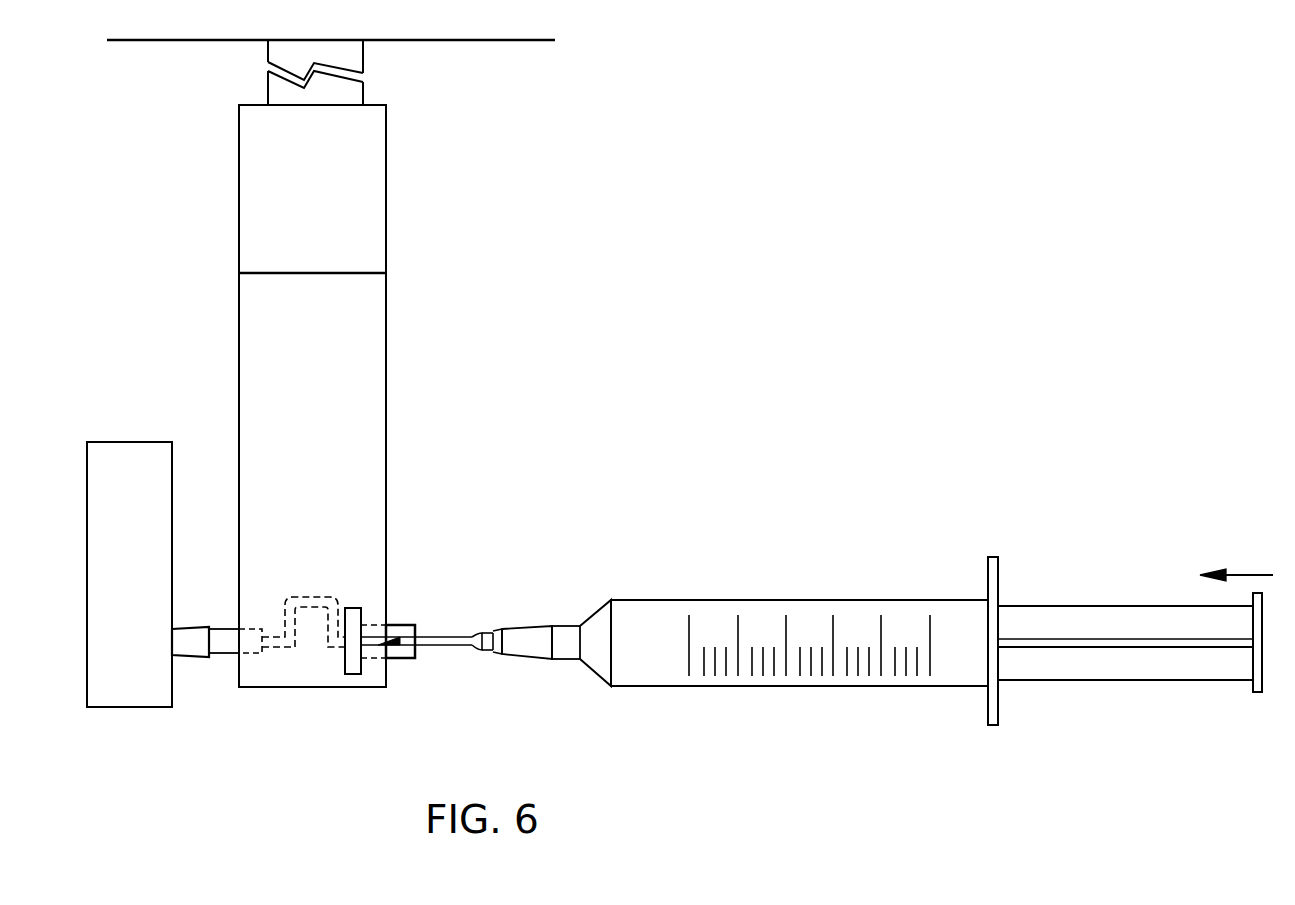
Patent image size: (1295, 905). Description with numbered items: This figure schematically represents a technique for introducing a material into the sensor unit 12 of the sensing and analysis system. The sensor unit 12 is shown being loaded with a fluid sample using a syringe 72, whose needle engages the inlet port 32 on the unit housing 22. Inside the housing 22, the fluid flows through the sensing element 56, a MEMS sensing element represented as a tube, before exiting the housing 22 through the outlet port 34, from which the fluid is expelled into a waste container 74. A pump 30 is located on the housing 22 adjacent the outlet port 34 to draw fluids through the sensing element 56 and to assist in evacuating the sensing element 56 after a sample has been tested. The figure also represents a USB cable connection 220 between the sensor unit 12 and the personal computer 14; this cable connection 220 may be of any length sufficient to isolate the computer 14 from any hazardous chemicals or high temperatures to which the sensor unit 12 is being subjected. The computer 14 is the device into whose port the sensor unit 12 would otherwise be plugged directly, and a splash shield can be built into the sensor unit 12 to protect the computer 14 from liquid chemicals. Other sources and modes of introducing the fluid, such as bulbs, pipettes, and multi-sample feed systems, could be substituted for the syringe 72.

The sensor unit 12 is at (430, 335).
The personal computer 14 is at (462, 41).
The housing 22 is at (239, 392).
The USB cable connection 220 is at (239, 235).
The pump 30 is at (350, 662).
The inlet port 32 is at (377, 660).
The outlet port 34 is at (247, 630).
The sensing element 56 is at (317, 597).
The syringe 72 is at (840, 687).
The waste container 74 is at (157, 693).